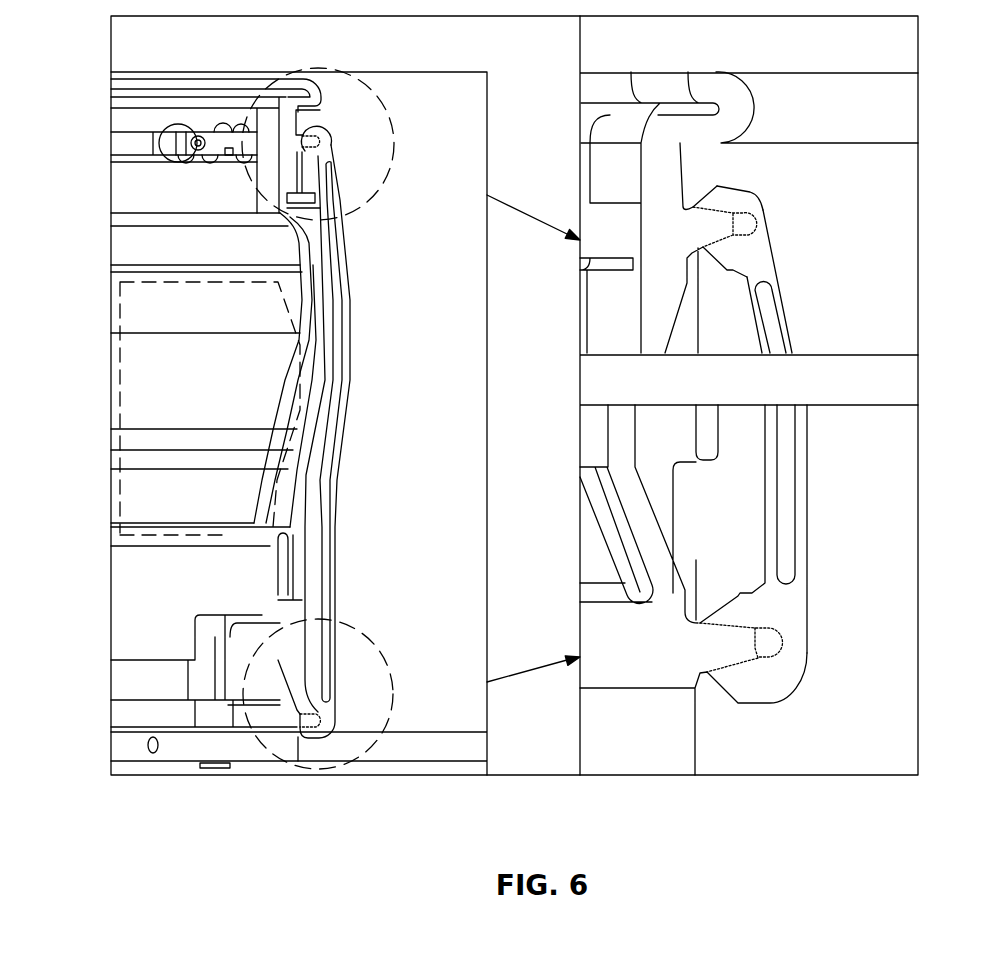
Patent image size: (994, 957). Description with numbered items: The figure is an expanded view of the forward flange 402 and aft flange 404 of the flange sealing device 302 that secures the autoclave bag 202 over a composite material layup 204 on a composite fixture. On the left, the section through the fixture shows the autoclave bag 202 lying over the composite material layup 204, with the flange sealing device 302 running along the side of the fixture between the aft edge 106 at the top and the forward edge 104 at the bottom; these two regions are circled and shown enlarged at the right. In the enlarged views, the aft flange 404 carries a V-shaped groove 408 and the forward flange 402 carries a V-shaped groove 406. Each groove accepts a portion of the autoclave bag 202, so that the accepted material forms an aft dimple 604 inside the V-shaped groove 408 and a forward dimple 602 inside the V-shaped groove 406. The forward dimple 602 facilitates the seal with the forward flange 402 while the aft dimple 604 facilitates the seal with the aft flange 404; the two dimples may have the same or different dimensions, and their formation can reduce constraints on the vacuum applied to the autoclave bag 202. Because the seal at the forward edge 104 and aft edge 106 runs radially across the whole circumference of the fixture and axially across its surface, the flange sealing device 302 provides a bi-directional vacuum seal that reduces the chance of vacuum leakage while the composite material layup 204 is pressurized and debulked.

The forward edge 104 is at (376, 762).
The aft edge 106 is at (370, 70).
The autoclave bag 202 is at (183, 255).
The composite material layup 204 is at (117, 468).
The flange sealing device 302 is at (355, 360).
The forward flange 402 is at (748, 692).
The aft flange 404 is at (717, 187).
The V-shaped groove 406 is at (772, 637).
The V-shaped groove 408 is at (757, 217).
The forward dimple 602 is at (753, 650).
The aft dimple 604 is at (733, 218).